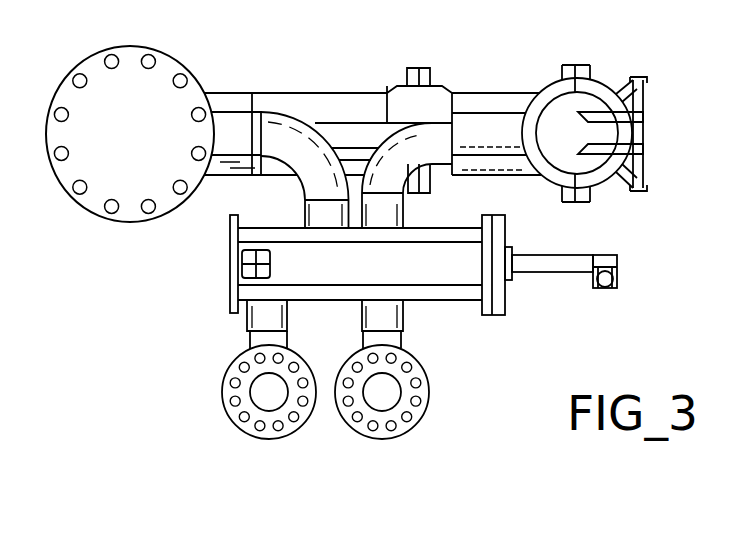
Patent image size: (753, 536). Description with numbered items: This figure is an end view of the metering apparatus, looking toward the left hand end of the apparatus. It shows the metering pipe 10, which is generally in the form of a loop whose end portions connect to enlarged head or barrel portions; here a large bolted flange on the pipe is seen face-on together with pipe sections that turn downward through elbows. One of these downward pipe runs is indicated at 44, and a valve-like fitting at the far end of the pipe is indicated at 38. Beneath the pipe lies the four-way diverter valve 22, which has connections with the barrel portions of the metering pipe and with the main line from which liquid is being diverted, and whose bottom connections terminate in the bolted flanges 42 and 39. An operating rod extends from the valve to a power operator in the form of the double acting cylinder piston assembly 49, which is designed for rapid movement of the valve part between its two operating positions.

The metering pipe 10 is at (349, 88).
The left elbow pipe 44 is at (240, 111).
The valve 38 is at (492, 112).
The four-way diverter valve 22 is at (456, 300).
The double acting cylinder piston assembly 49 is at (555, 273).
The left outlet flange 42 is at (223, 398).
The right outlet flange 39 is at (427, 405).